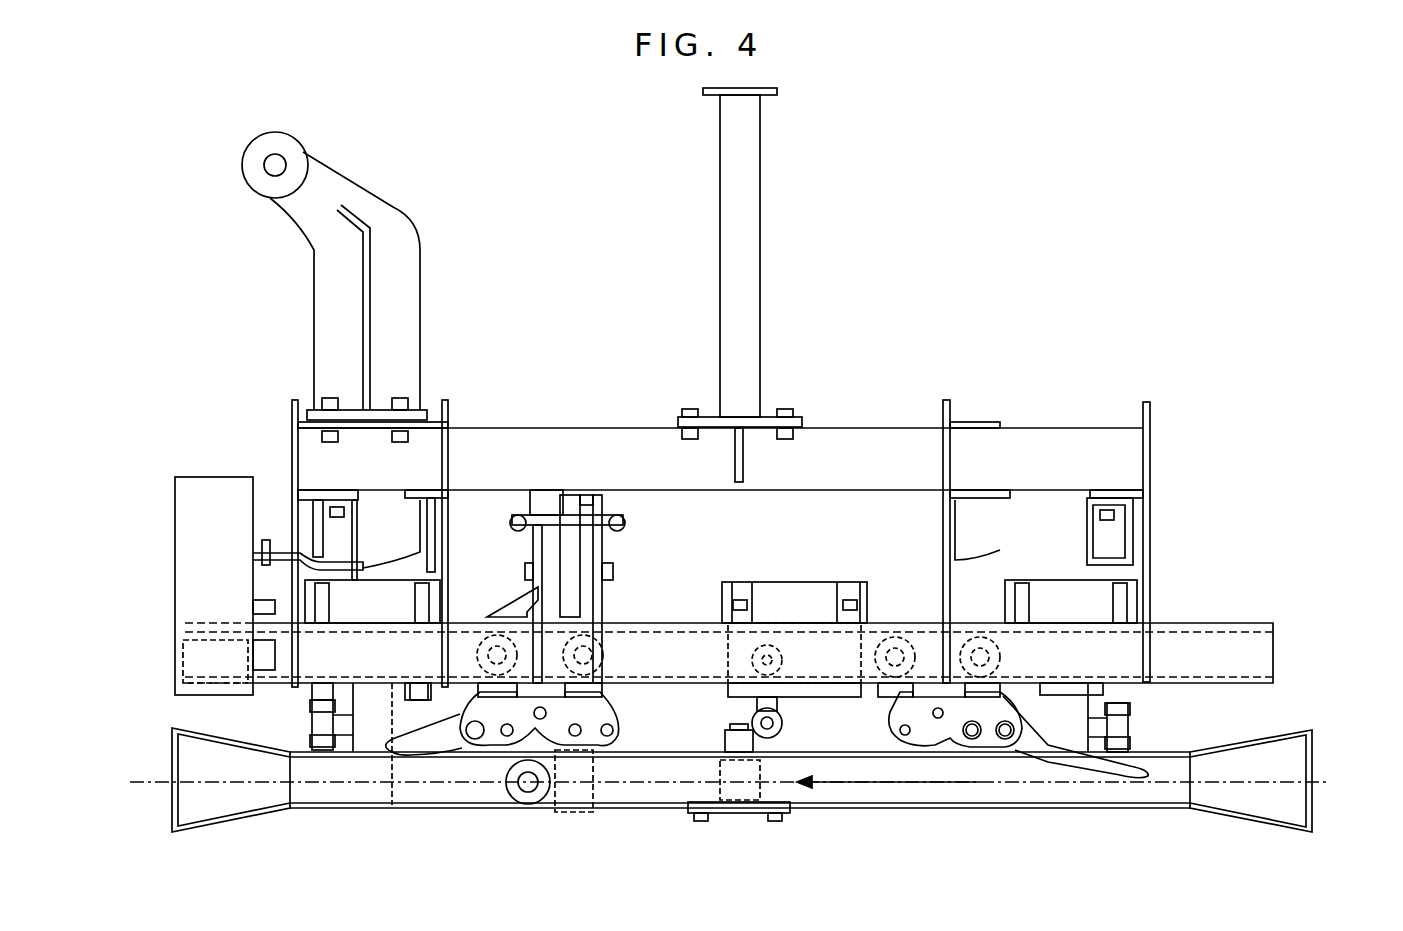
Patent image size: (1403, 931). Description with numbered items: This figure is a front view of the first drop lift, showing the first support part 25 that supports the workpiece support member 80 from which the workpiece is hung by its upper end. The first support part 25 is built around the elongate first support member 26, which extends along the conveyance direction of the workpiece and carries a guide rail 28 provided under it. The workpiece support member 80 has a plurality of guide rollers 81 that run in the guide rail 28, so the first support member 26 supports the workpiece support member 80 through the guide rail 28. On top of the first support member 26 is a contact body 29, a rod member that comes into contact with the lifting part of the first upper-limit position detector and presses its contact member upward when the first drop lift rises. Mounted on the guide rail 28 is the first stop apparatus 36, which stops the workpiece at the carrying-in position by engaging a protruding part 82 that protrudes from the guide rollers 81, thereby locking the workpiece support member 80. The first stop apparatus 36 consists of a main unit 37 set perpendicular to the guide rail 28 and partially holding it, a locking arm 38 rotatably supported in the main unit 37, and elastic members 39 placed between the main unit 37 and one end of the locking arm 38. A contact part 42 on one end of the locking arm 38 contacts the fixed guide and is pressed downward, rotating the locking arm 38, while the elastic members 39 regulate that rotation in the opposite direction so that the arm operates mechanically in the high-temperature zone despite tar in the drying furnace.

The first support part 25 is at (1196, 405).
The first support member 26 is at (1058, 430).
The guide rail 28 is at (1210, 640).
The contact body 29 is at (748, 250).
The first stop apparatus 36 is at (627, 570).
The main unit 37 is at (605, 598).
The locking arm 38 is at (605, 543).
The elastic members 39 is at (633, 500).
The contact part 42 is at (547, 490).
The workpiece support member 80 is at (1322, 725).
The guide rollers 81 is at (485, 632).
The protruding part 82 is at (515, 605).